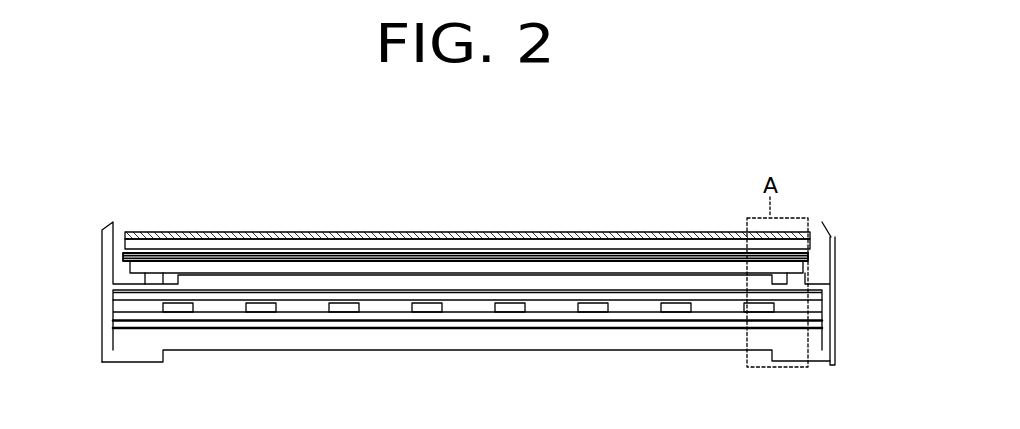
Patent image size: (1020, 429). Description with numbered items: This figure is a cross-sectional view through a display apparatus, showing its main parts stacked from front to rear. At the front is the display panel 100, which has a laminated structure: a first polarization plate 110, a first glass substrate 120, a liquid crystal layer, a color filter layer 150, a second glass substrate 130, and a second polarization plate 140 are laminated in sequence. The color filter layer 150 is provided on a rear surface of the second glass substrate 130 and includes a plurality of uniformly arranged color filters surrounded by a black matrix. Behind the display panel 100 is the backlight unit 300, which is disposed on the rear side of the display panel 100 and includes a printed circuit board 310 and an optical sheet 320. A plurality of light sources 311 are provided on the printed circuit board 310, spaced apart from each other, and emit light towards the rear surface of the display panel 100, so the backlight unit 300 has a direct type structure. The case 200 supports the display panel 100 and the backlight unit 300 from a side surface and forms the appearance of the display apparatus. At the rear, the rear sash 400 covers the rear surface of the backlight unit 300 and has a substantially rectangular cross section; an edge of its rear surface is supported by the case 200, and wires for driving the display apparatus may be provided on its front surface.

The display panel 100 is at (522, 256).
The first polarization plate 110 is at (772, 276).
The first glass substrate 120 is at (808, 268).
The second glass substrate 130 is at (812, 244).
The second polarization plate 140 is at (808, 231).
The color filter layer 150 is at (811, 257).
The case 200 is at (112, 240).
The backlight unit 300 is at (416, 336).
The printed circuit board 310 is at (113, 319).
The light sources 311 is at (349, 313).
The optical sheet 320 is at (113, 291).
The rear sash 400 is at (215, 343).